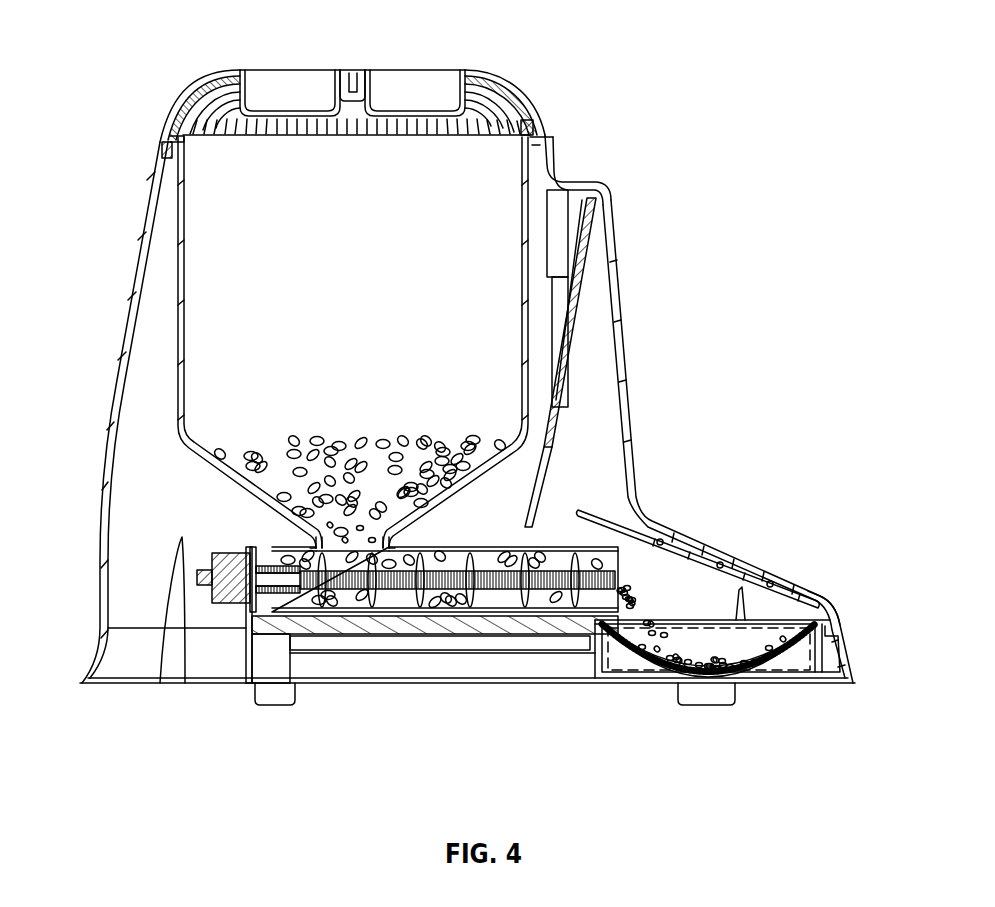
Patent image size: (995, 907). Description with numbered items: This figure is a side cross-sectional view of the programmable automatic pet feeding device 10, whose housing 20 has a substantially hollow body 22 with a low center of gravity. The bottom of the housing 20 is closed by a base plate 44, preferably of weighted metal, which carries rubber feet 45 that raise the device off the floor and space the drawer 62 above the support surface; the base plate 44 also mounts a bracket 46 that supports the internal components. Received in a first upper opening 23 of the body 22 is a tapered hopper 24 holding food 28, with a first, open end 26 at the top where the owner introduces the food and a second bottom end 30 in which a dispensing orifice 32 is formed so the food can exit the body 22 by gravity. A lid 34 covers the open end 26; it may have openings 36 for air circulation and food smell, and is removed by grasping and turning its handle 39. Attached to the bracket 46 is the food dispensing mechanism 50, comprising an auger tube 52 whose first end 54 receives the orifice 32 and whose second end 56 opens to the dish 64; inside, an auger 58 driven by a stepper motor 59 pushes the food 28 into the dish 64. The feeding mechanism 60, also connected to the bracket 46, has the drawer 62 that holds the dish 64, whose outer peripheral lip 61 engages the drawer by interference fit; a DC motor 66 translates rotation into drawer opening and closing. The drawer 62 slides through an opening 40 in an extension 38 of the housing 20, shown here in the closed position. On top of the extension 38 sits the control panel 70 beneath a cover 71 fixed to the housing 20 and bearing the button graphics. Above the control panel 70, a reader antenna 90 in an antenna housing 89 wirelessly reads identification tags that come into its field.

The pet feeding device 10 is at (697, 88).
The housing 20 is at (100, 334).
The body 22 is at (139, 245).
The first upper opening 23 is at (163, 150).
The hopper 24 is at (183, 368).
The first, open end 26 is at (181, 131).
The food 28 is at (372, 447).
The second bottom end 30 is at (398, 525).
The dispensing orifice 32 is at (390, 548).
The lid 34 is at (493, 78).
The openings 36 is at (529, 131).
The extension 38 is at (818, 600).
The handle 39 is at (363, 80).
The opening 40 is at (826, 623).
The base plate 44 is at (200, 685).
The feet 45 is at (280, 706).
The bracket 46 is at (250, 649).
The food dispensing mechanism 50 is at (187, 616).
The auger tube 52 is at (533, 546).
The first end 54 is at (290, 550).
The second end 56 is at (618, 561).
The auger 58 is at (445, 560).
The stepper motor 59 is at (232, 558).
The feeding mechanism 60 is at (782, 698).
The outer peripheral lip 61 is at (566, 653).
The drawer 62 is at (846, 660).
The dish 64 is at (605, 713).
The DC motor 66 is at (430, 685).
The control panel 70 is at (600, 514).
The cover 71 is at (712, 560).
The antenna housing 89 is at (580, 257).
The reader antenna 90 is at (583, 288).